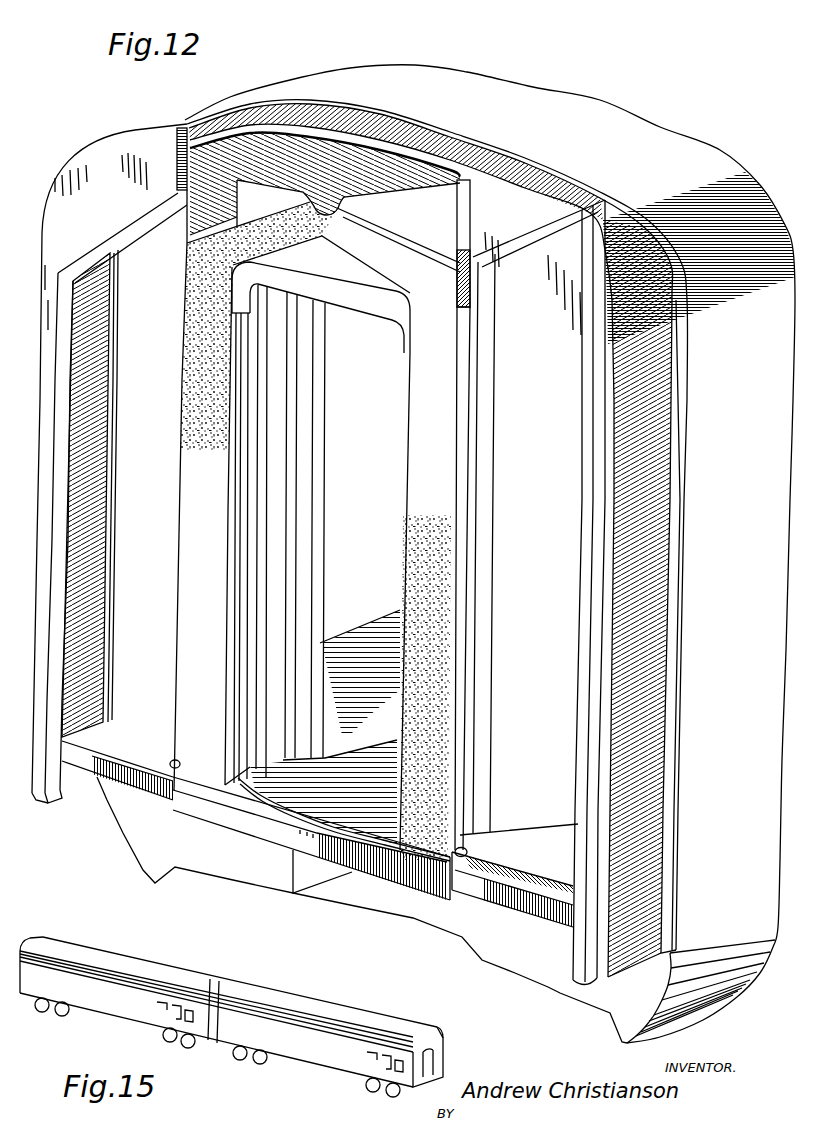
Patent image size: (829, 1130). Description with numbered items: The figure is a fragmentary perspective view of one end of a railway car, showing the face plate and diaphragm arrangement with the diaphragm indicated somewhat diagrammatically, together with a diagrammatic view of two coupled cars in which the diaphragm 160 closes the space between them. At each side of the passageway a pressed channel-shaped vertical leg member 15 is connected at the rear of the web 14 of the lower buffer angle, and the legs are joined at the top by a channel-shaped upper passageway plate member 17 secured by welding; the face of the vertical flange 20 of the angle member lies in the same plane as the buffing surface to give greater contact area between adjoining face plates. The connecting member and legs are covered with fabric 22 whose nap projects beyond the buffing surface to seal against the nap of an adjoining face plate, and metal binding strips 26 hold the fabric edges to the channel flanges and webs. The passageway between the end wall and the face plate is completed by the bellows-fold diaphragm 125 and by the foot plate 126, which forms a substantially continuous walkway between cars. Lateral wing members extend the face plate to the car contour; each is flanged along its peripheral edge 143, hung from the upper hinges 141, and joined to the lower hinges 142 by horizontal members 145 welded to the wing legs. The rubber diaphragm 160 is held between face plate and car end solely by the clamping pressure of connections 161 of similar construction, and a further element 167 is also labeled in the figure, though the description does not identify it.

In FIG. 12, the web 14 is at (373, 861).
In FIG. 12, the vertical leg member 15 is at (200, 481).
In FIG. 12, the upper passageway plate member 17 is at (362, 241).
In FIG. 12, the vertical flange 20 is at (343, 300).
In FIG. 12, the fabric 22 is at (200, 321).
In FIG. 12, the metal binding strip 26 is at (194, 231).
In FIG. 12, the diaphragm 125 is at (247, 597).
In FIG. 12, the foot plate 126 is at (350, 790).
In FIG. 12, the upper hinge 141 is at (175, 160).
In FIG. 12, the lower hinge 142 is at (172, 760).
In FIG. 12, the peripheral edge 143 is at (607, 597).
In FIG. 12, the horizontal member 145 is at (107, 768).
In FIG. 12, the diaphragm 160 is at (468, 150).
In FIG. 15, the diaphragm 160 is at (230, 982).
In FIG. 12, the connection 161 is at (115, 430).
In FIG. 12, the outer shell 167 is at (573, 175).